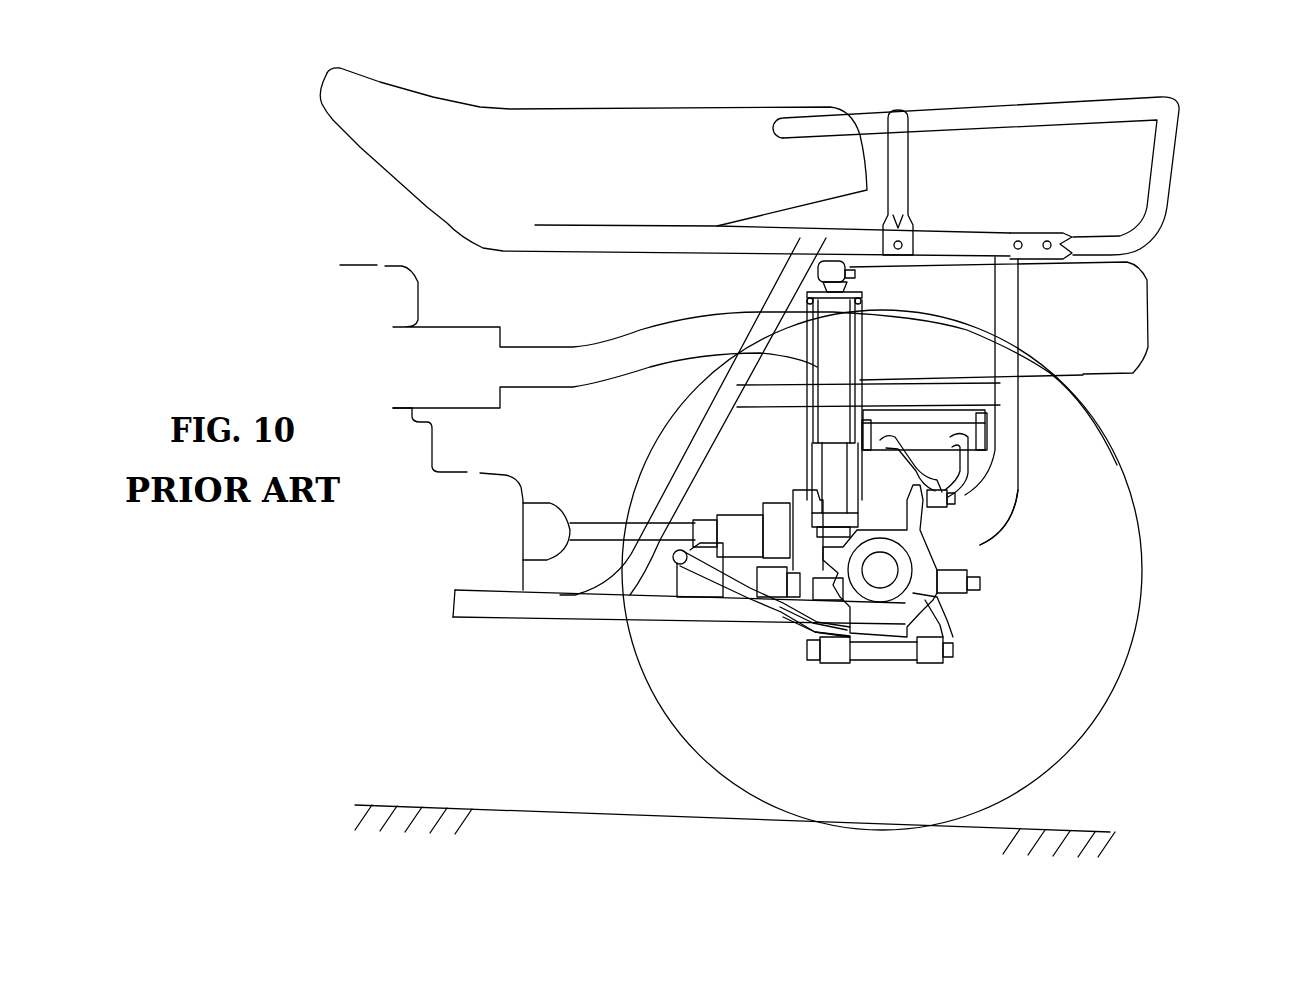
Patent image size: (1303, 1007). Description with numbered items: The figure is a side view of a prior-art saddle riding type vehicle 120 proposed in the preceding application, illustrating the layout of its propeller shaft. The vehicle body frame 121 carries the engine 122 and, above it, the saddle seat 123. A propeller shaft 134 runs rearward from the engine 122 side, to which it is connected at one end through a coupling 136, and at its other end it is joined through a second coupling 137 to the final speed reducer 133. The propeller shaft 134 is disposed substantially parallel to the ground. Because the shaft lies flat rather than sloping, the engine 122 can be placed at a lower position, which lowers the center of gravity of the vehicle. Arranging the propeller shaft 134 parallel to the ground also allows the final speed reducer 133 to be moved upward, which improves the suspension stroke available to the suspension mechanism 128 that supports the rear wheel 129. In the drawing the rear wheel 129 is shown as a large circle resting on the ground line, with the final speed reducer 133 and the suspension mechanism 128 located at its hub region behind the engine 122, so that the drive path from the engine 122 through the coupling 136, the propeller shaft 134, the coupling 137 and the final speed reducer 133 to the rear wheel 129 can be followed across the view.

The saddle riding type vehicle 120 is at (260, 70).
The vehicle body frame 121 is at (500, 628).
The engine 122 is at (345, 265).
The saddle seat 123 is at (563, 104).
The suspension mechanism 128 is at (987, 515).
The rear wheel 129 is at (1143, 568).
The final speed reducer 133 is at (878, 630).
The propeller shaft 134 is at (607, 510).
The coupling 136 is at (548, 565).
The coupling 137 is at (740, 603).